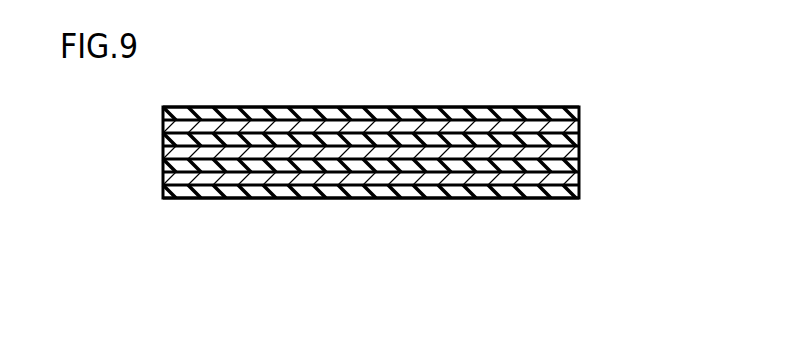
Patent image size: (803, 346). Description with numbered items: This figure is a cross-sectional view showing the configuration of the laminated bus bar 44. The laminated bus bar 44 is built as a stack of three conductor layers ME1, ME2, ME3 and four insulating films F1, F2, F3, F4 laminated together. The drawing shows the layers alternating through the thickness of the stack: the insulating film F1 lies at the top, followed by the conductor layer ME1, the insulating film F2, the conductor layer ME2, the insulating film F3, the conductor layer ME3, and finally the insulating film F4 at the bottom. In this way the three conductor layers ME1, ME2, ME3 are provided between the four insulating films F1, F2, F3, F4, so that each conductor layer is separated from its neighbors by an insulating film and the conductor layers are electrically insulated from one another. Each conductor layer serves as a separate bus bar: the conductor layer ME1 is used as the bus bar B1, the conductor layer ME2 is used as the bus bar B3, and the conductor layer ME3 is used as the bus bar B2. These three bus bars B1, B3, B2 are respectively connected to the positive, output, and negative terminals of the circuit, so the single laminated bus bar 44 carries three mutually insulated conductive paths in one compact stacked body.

The laminated bus bar 44 is at (182, 107).
The insulating film F1 is at (566, 113).
The insulating film F2 is at (566, 140).
The insulating film F3 is at (566, 166).
The insulating film F4 is at (566, 191).
The conductor layer ME1 is at (566, 127).
The conductor layer ME2 is at (566, 152).
The conductor layer ME3 is at (566, 178).
The bus bar B1 is at (178, 130).
The bus bar B2 is at (178, 179).
The bus bar B3 is at (178, 154).